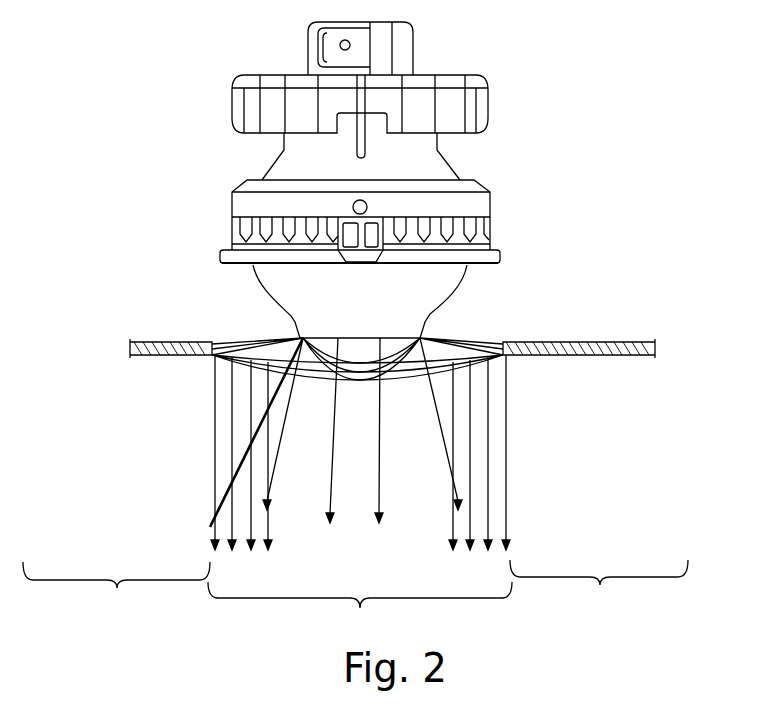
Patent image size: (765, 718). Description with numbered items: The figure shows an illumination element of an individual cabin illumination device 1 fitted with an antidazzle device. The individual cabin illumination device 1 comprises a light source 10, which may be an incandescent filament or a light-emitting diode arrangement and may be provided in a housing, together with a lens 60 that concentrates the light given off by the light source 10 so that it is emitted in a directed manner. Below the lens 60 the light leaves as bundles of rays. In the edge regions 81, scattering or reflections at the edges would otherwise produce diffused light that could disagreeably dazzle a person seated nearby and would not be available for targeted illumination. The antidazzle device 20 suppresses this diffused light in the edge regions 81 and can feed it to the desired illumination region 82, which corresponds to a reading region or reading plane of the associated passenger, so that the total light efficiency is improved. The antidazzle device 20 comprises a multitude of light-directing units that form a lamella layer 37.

The individual cabin illumination device 1 is at (560, 155).
The light source 10 is at (442, 280).
The lens 60 is at (444, 333).
The antidazzle device 20 is at (407, 382).
The lamella layer 37 is at (303, 392).
The edge regions 81 is at (355, 490).
The desired illumination region 82 is at (360, 610).